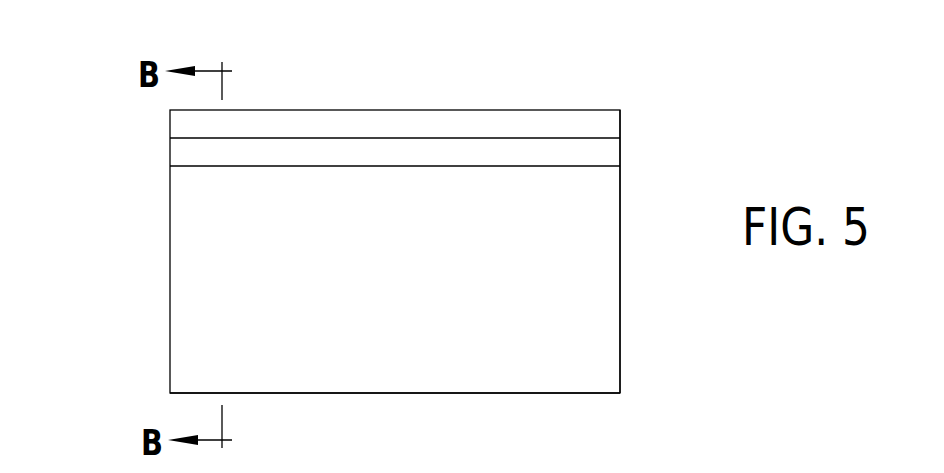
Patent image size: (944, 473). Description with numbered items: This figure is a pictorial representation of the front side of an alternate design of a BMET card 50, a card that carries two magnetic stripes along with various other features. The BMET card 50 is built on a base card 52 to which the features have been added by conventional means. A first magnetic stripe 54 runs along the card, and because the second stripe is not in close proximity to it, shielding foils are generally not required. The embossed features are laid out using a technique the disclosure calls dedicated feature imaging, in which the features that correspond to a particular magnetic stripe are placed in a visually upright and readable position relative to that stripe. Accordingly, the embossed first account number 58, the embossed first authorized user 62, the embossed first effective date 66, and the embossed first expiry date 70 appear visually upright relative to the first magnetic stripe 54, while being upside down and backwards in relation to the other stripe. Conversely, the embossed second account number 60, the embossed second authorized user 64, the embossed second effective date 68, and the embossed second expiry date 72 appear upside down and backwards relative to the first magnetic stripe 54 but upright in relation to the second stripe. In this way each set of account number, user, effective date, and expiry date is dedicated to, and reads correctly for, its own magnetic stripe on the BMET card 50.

The BMET card 50 is at (282, 83).
The base card 52 is at (620, 127).
The first magnetic stripe 54 is at (170, 149).
The embossed first account number 58 is at (213, 184).
The embossed second account number 60 is at (213, 320).
The embossed first authorized user 62 is at (212, 211).
The embossed second authorized user 64 is at (213, 295).
The embossed first effective date 66 is at (445, 203).
The embossed second effective date 68 is at (470, 300).
The embossed first expiry date 70 is at (540, 203).
The embossed second expiry date 72 is at (595, 291).